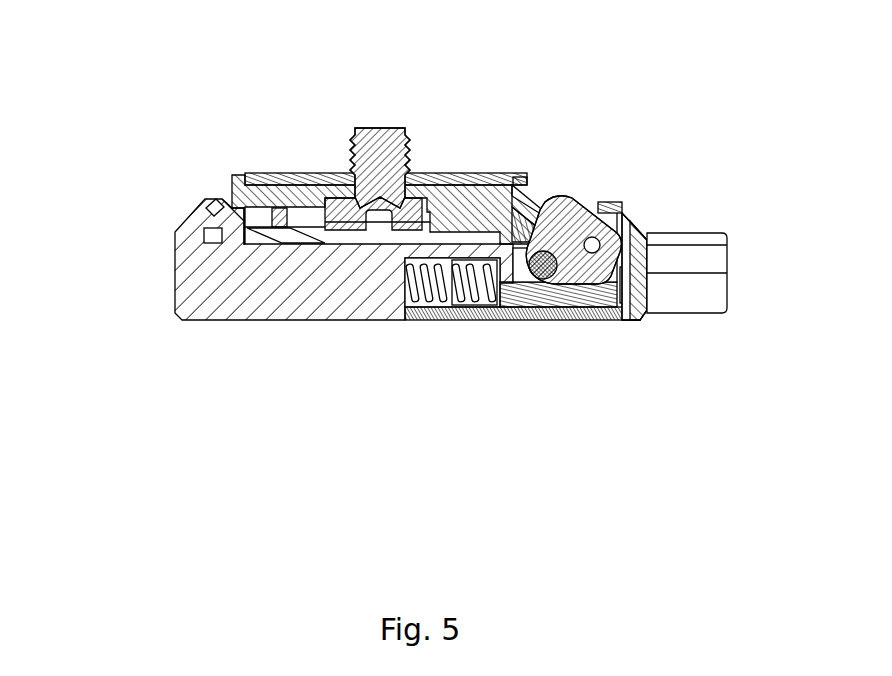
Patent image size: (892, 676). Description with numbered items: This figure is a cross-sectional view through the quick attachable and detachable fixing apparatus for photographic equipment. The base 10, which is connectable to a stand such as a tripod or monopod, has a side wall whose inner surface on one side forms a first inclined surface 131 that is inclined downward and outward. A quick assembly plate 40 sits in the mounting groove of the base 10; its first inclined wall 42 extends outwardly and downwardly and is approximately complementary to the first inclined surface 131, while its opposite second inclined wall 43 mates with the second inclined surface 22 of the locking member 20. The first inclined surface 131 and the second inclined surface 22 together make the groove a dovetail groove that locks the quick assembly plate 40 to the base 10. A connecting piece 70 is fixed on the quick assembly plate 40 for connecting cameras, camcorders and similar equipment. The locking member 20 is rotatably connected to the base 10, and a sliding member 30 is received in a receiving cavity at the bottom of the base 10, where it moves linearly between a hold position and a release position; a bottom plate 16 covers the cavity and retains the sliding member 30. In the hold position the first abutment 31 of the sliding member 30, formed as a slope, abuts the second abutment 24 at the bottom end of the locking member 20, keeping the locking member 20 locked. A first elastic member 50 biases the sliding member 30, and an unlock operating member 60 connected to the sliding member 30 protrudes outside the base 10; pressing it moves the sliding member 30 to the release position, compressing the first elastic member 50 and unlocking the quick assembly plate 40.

The base 10 is at (192, 317).
The first inclined surface 131 is at (210, 228).
The first inclined wall 42 is at (220, 224).
The quick assembly plate 40 is at (453, 173).
The connecting piece 70 is at (378, 128).
The first elastic member 50 is at (423, 307).
The bottom plate 16 is at (518, 320).
The sliding member 30 is at (578, 292).
The second inclined wall 43 is at (540, 208).
The second abutment 24 is at (592, 283).
The first abutment 31 is at (622, 280).
The second inclined surface 22 is at (607, 206).
The locking member 20 is at (638, 215).
The unlock operating member 60 is at (678, 263).